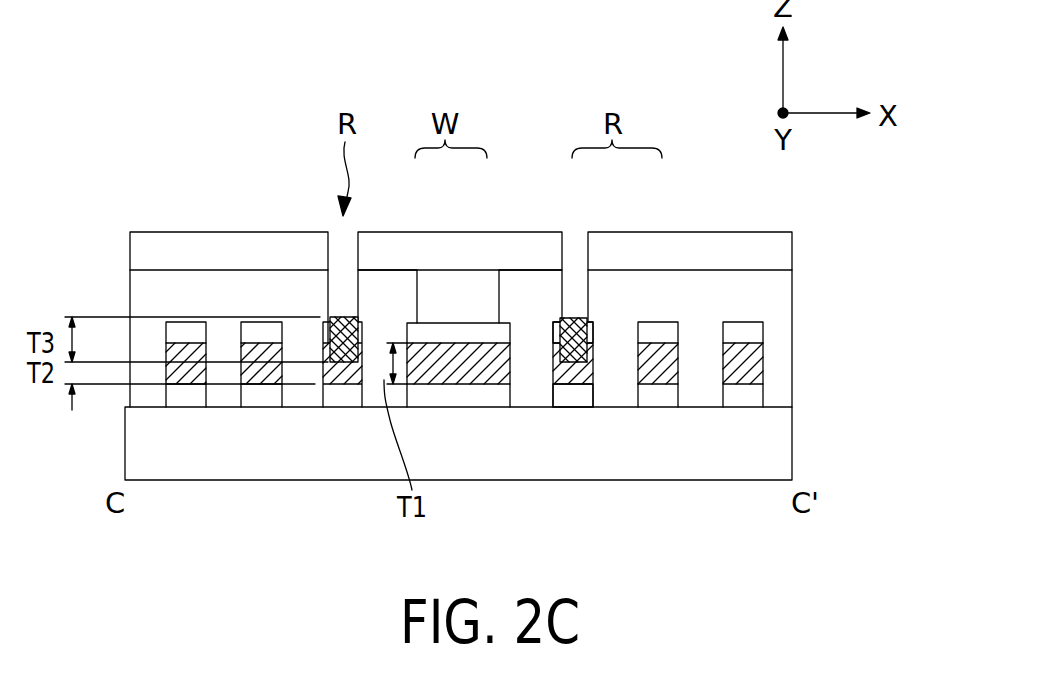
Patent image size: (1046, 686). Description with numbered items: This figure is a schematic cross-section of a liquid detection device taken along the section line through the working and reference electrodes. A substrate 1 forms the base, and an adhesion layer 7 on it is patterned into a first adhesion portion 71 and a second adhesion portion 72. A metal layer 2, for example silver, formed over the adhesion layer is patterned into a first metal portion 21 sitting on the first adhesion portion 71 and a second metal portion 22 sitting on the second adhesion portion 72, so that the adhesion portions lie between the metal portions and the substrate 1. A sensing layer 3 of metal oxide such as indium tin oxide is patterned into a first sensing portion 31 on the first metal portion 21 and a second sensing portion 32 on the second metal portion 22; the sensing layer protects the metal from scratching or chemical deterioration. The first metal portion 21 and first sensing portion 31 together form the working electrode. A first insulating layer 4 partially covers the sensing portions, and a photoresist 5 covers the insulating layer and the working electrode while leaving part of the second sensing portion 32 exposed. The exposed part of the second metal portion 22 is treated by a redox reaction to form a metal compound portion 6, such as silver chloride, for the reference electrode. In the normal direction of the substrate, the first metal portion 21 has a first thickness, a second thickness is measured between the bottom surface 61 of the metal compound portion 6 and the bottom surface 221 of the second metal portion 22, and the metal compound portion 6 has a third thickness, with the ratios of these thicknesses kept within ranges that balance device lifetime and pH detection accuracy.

The substrate 1 is at (778, 452).
The metal layer 2 is at (755, 367).
The sensing layer 3 is at (755, 337).
The first insulating layer 4 is at (770, 292).
The photoresist 5 is at (770, 252).
The metal compound portion 6 is at (574, 331).
The adhesion layer 7 is at (755, 399).
The first metal portion 21 is at (462, 350).
The second metal portion 22 is at (592, 357).
The first sensing portion 31 is at (433, 330).
The second sensing portion 32 is at (557, 333).
The bottom surface of the metal compound portion 61 is at (337, 363).
The first adhesion portion 71 is at (453, 400).
The second adhesion portion 72 is at (583, 401).
The bottom surface of the second metal portion 221 is at (349, 381).